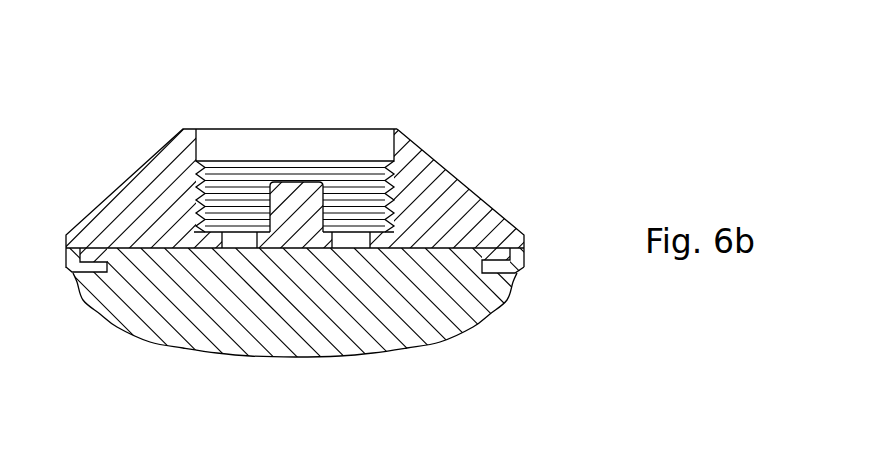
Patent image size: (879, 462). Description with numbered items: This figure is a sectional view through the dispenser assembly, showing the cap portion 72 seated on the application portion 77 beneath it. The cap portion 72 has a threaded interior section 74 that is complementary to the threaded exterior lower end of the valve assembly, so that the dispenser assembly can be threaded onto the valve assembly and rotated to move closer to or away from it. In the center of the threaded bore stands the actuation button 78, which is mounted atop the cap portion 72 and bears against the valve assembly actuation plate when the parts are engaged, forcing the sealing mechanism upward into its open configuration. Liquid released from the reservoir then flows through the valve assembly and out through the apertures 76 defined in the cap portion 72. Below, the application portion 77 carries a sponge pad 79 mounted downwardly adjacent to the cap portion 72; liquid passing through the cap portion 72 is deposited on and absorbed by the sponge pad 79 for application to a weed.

The cap portion 72 is at (497, 190).
The threaded interior section 74 is at (373, 185).
The aperture 76 is at (245, 242).
The application portion 77 is at (514, 312).
The actuation button 78 is at (290, 192).
The sponge pad 79 is at (437, 310).